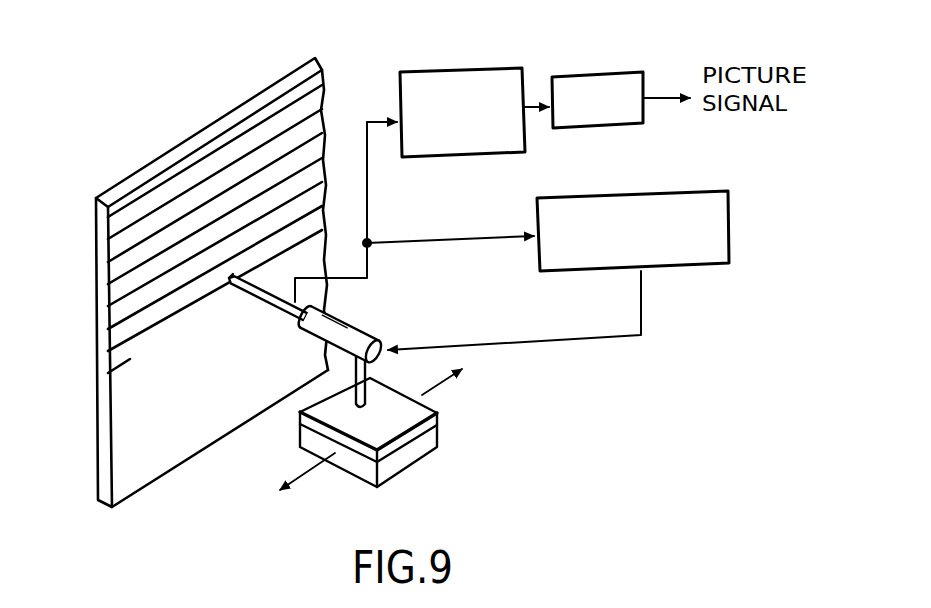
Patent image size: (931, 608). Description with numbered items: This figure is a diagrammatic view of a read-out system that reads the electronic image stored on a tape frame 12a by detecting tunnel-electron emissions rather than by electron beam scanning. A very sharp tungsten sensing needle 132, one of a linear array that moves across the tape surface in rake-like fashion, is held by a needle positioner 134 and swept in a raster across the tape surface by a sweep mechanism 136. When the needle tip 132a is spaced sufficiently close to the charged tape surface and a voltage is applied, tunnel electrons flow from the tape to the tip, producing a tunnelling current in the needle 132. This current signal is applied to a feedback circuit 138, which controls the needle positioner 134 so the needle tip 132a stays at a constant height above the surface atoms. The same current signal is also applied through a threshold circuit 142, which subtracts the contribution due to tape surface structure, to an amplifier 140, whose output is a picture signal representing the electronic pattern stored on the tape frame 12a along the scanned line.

The tape frame 12a is at (100, 403).
The sensing needle 132 is at (276, 298).
The needle tip 132a is at (226, 281).
The needle positioner 134 is at (359, 338).
The sweep mechanism 136 is at (427, 427).
The feedback circuit 138 is at (730, 212).
The amplifier 140 is at (600, 75).
The threshold circuit 142 is at (465, 70).